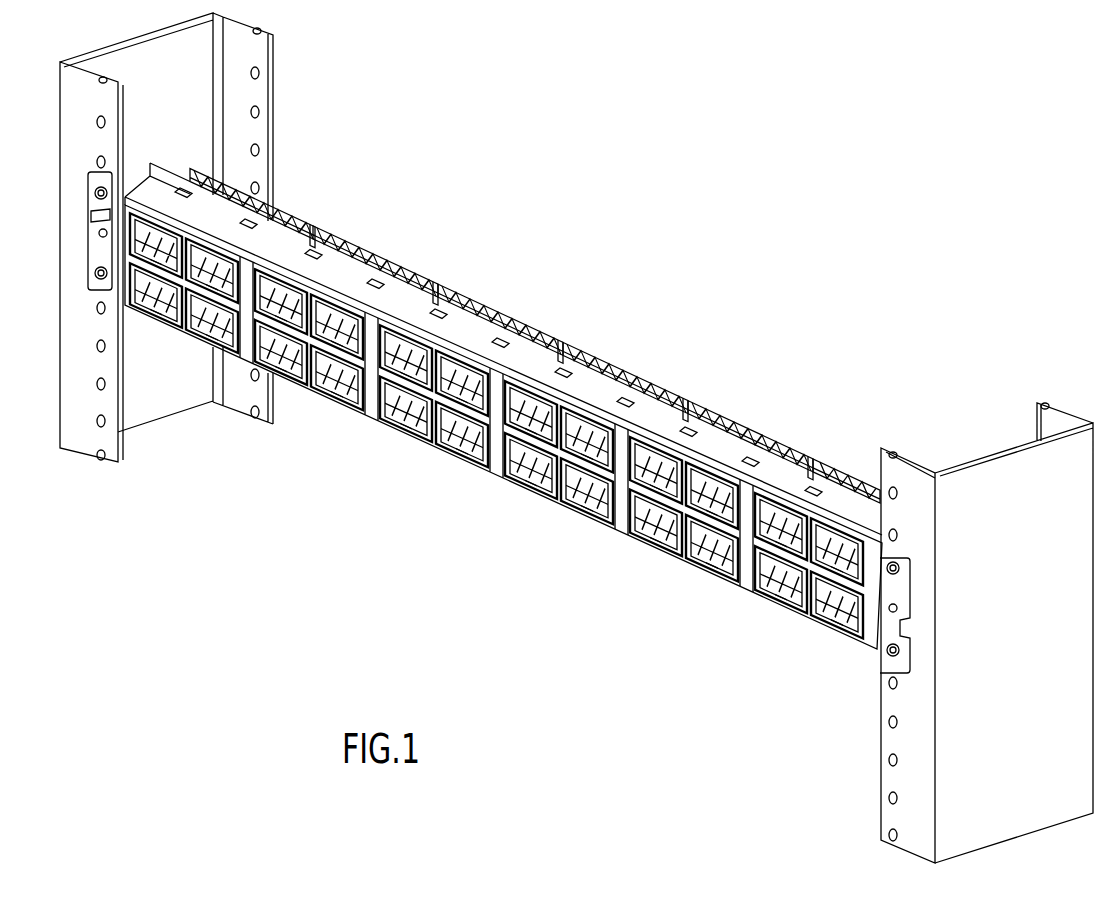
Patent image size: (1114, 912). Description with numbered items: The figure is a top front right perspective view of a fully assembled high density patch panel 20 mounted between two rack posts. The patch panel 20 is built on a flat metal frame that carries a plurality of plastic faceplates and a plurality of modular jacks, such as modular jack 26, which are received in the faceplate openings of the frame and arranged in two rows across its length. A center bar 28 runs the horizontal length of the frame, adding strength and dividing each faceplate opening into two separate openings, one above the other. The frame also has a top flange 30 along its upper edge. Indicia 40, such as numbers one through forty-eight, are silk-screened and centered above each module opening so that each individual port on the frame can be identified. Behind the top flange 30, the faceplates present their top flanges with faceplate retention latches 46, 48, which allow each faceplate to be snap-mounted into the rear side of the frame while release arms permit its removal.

The patch panel 20 is at (499, 430).
The modular jack 26 is at (300, 225).
The center bar 28 is at (472, 462).
The top flange 30 is at (218, 210).
The indicia 40 is at (377, 392).
The faceplate retention latch 46 is at (572, 360).
The faceplate retention latch 48 is at (637, 385).